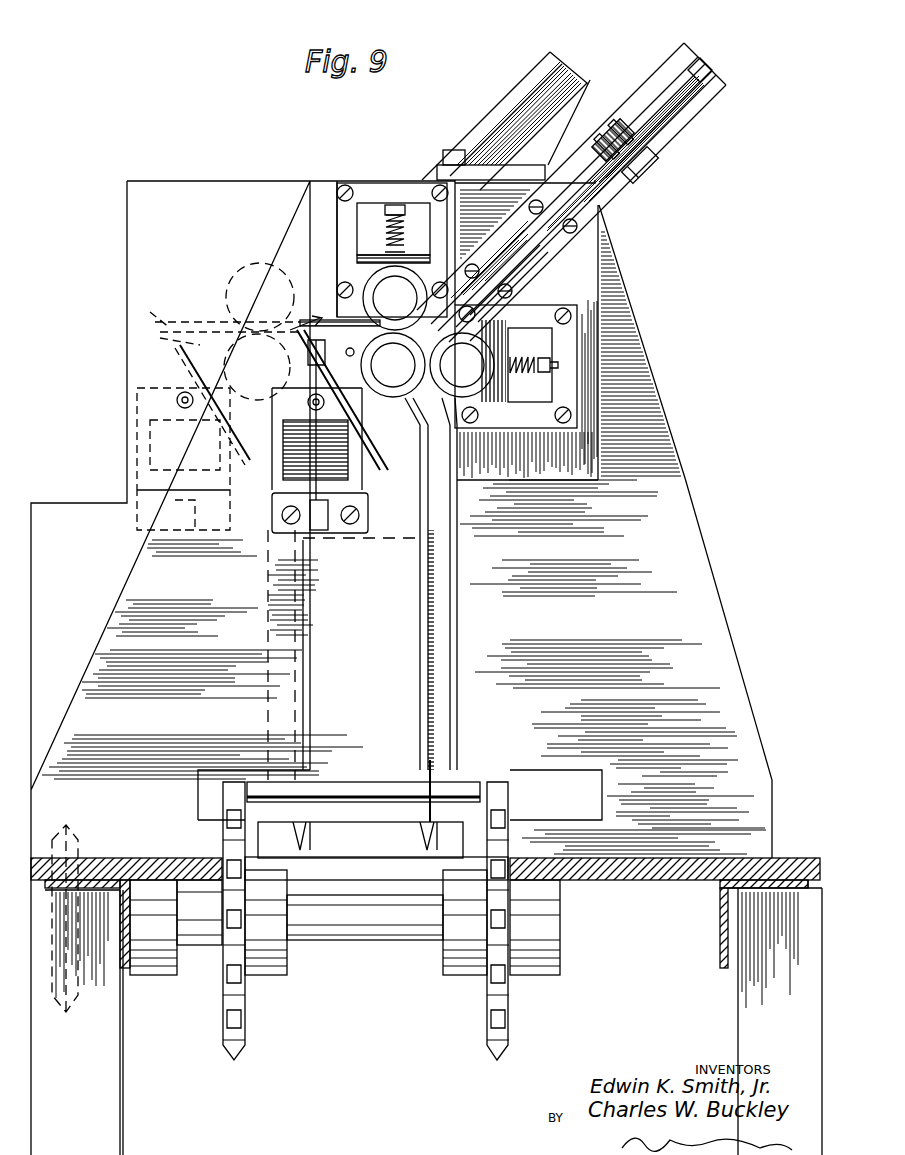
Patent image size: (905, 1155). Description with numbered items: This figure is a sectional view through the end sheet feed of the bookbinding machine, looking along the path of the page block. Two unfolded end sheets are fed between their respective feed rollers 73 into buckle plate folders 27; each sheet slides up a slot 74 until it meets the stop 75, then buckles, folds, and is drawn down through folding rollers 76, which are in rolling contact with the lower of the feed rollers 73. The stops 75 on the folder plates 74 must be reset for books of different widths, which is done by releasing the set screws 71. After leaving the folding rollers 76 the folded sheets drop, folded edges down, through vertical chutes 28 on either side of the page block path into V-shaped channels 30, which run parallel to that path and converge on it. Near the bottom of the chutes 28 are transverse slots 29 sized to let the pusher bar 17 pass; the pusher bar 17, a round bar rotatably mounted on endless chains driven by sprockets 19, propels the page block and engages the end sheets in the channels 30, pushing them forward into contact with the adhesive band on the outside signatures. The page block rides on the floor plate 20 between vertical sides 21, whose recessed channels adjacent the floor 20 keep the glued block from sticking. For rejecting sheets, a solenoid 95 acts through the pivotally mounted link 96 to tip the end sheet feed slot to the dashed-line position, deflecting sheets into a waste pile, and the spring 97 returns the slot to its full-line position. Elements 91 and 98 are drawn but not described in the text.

The pusher bar 17 is at (465, 790).
The sprockets 19 is at (246, 1012).
The floor plate 20 is at (370, 850).
The vertical sides 21 is at (420, 716).
The buckle plate folders 27 is at (495, 115).
The vertical chutes 28 is at (430, 614).
The transverse slots 29 is at (212, 770).
The V-shaped channels 30 is at (300, 824).
The set screws 71 is at (645, 174).
The feed rollers 73 is at (240, 276).
The slots 74 is at (590, 170).
The stop 75 is at (630, 124).
The folding rollers 76 is at (305, 360).
The arrow/guide 91 is at (300, 320).
The solenoid 95 is at (290, 492).
The pivotally mounted link 96 is at (310, 372).
The spring 97 is at (312, 458).
The rod 98 is at (420, 824).